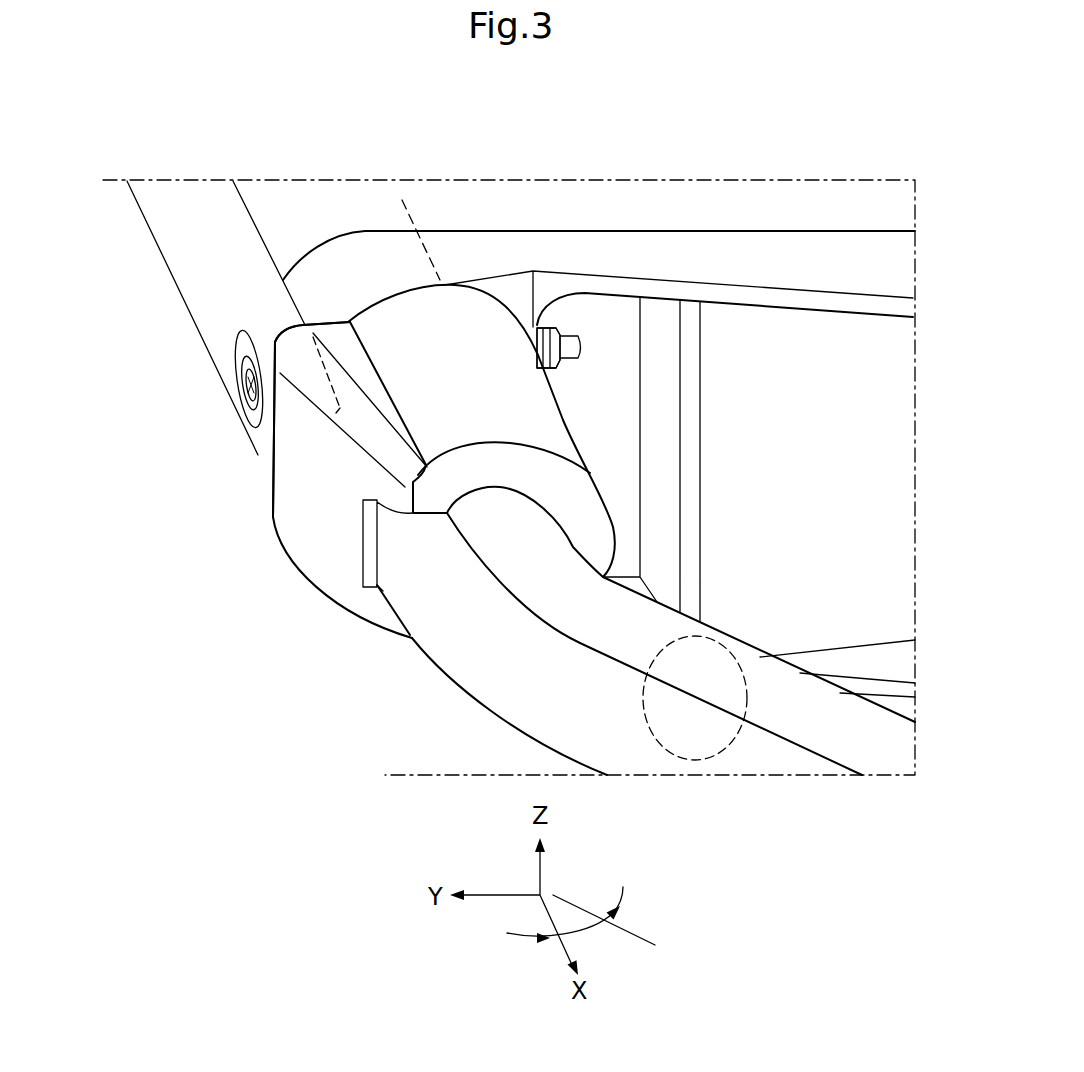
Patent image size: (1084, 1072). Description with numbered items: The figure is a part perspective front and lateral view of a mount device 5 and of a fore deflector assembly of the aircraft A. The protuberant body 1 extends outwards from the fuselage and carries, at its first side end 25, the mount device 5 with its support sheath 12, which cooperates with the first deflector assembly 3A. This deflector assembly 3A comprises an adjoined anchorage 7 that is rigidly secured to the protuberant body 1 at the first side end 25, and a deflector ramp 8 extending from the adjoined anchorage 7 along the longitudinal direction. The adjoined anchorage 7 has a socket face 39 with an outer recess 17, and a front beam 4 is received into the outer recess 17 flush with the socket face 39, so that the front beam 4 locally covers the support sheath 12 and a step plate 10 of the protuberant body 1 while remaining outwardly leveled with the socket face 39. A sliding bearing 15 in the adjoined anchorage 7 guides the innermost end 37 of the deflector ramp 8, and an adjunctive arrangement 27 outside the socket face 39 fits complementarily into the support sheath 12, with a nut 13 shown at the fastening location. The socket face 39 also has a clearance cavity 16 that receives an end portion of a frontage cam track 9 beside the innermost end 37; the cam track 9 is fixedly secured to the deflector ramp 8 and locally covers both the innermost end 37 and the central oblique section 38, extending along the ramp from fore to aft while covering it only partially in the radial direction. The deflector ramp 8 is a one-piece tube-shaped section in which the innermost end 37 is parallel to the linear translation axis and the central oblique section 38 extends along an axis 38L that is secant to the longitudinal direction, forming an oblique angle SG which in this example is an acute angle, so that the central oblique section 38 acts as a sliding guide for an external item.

The protuberant body 1 is at (378, 192).
The first deflector assembly 3A is at (731, 585).
The front beam 4 is at (190, 257).
The mount device 5 is at (817, 272).
The adjoined anchorage 7 is at (311, 419).
The deflector ramp 8 is at (759, 657).
The frontage cam track 9 is at (455, 642).
The step plate 10 is at (308, 215).
The support sheath 12 is at (410, 213).
The nut 13 is at (564, 320).
The adjunctive arrangement 27 is at (548, 348).
The sliding bearing 15 is at (523, 494).
The clearance cavity 16 is at (370, 517).
The outer recess 17 is at (330, 372).
The first side end 25 is at (275, 452).
The innermost end 37 is at (370, 545).
The central oblique section 38 is at (648, 725).
The axis of the central oblique section 38L is at (629, 933).
The socket face 39 is at (273, 518).
The aircraft A is at (509, 438).
The oblique angle SG is at (585, 915).